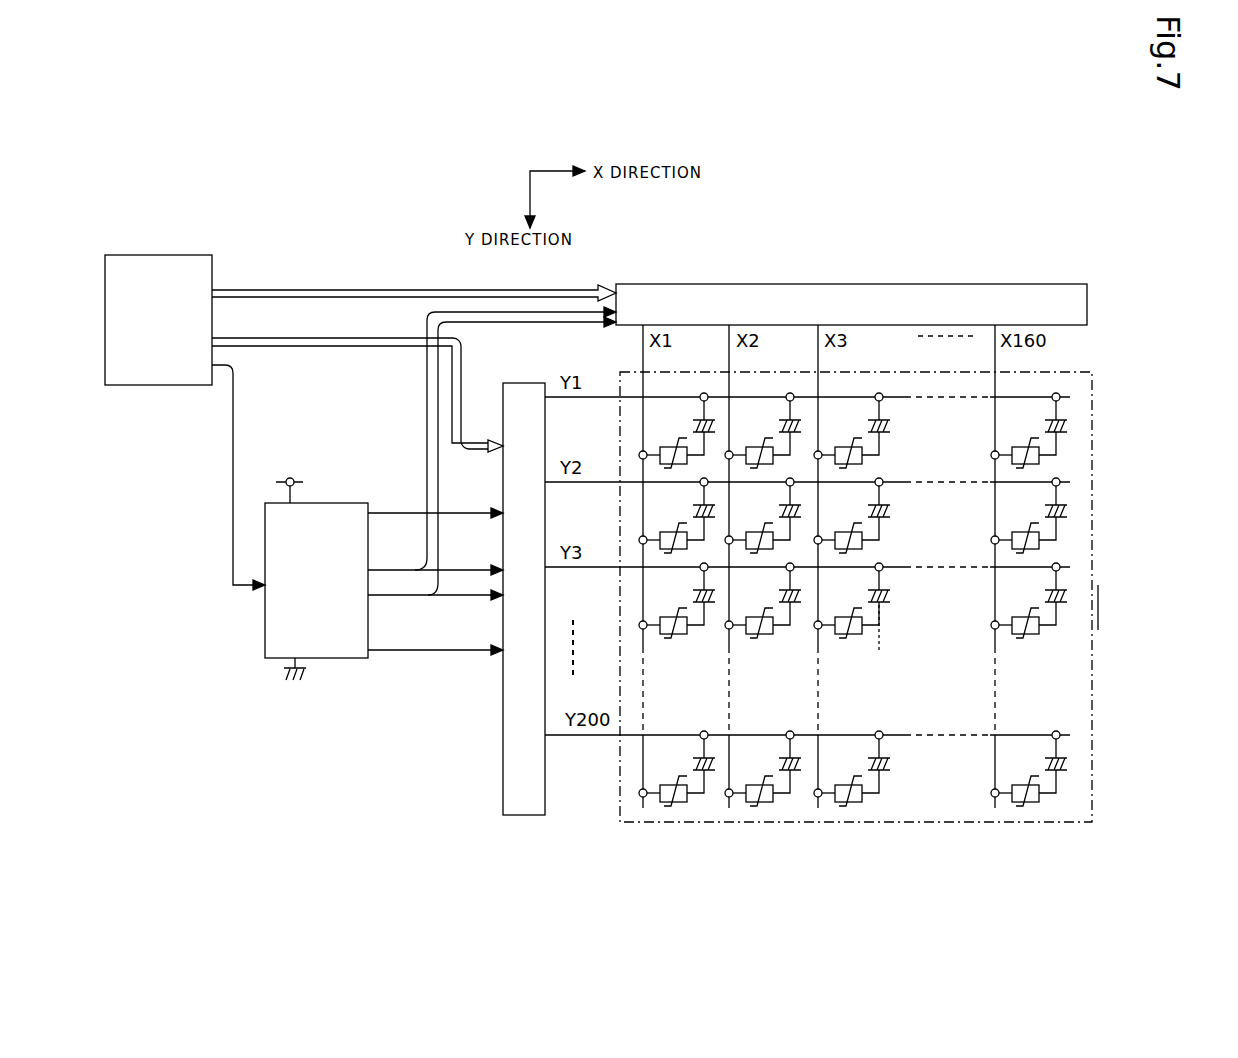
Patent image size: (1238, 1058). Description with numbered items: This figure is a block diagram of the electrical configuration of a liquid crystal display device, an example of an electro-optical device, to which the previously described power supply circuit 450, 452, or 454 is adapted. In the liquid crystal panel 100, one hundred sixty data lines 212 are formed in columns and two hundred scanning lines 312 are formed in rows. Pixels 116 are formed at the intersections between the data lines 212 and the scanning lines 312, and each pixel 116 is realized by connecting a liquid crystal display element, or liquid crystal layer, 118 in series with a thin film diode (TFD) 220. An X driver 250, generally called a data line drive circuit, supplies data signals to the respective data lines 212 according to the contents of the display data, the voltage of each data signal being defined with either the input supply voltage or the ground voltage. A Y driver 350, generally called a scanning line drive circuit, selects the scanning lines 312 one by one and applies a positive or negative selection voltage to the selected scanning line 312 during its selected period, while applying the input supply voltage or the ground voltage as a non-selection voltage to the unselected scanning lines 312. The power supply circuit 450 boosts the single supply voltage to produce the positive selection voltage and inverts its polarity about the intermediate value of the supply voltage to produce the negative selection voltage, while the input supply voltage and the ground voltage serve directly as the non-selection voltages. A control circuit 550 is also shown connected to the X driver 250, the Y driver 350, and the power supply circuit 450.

The liquid crystal panel 100 is at (868, 822).
The pixel 116 is at (891, 630).
The liquid crystal display element (liquid crystal layer) 118 is at (887, 604).
The data line 212 is at (819, 727).
The thin film diode (TFD) 220 is at (860, 634).
The X driver 250 is at (1057, 284).
The scanning line 312 is at (900, 565).
The Y driver 350 is at (528, 815).
The power supply circuit 450 is at (384, 596).
The power supply circuit 452 is at (389, 523).
The power supply circuit 454 is at (350, 658).
The control circuit 550 is at (212, 262).